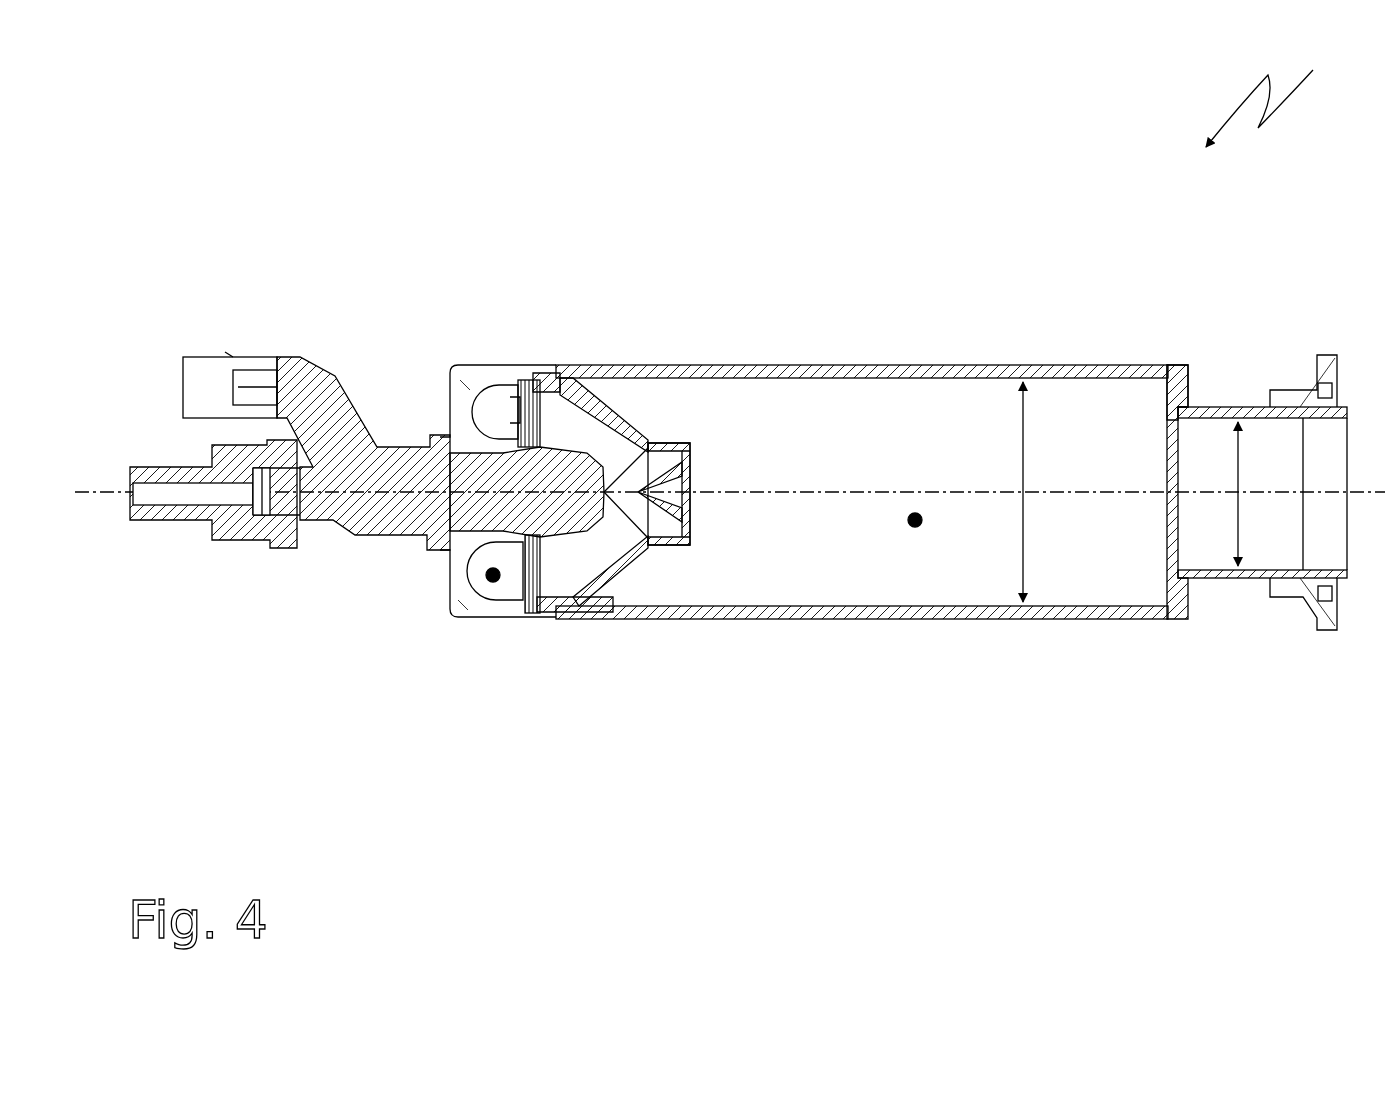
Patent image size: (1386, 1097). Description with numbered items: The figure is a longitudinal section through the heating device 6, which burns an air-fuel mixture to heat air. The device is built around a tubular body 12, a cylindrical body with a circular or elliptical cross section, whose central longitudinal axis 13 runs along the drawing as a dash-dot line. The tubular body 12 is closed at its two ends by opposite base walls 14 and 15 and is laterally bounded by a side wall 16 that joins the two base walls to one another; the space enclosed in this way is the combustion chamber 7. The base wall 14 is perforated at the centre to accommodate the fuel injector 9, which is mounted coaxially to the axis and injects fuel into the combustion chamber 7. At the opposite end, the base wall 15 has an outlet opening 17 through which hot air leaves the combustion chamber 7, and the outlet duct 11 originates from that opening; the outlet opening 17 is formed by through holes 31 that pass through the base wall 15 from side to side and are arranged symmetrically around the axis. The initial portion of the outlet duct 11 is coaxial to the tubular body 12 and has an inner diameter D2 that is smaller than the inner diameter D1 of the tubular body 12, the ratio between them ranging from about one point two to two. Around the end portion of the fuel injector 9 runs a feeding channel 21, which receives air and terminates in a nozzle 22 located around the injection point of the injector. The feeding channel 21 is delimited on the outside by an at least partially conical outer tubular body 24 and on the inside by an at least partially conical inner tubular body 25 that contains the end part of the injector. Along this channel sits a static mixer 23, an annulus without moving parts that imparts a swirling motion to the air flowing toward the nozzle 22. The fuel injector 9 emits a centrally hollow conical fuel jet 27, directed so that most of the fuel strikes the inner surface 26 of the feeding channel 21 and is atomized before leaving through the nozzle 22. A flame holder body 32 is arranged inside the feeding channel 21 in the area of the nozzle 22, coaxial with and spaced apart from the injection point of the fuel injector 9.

The heating device 6 is at (1268, 95).
The combustion chamber 7 is at (915, 530).
The fuel injector 9 is at (380, 512).
The outlet duct 11 is at (1237, 574).
The tubular body 12 is at (670, 768).
The longitudinal axis 13 is at (108, 495).
The base wall 14 is at (458, 400).
The base wall 15 is at (1173, 393).
The side wall 16 is at (1113, 614).
The outlet opening 17 is at (1130, 438).
The feeding channel 21 is at (493, 584).
The nozzle 22 is at (716, 528).
The static mixer 23 is at (537, 585).
The outer tubular body 24 is at (604, 410).
The inner tubular body 25 is at (565, 450).
The inner surface 26 is at (655, 462).
The fuel jet 27 is at (620, 557).
The through holes 31 is at (1171, 545).
The flame holder body 32 is at (665, 470).
The inner diameter of the tubular body D1 is at (1043, 492).
The inner diameter of the outlet duct D2 is at (1218, 494).